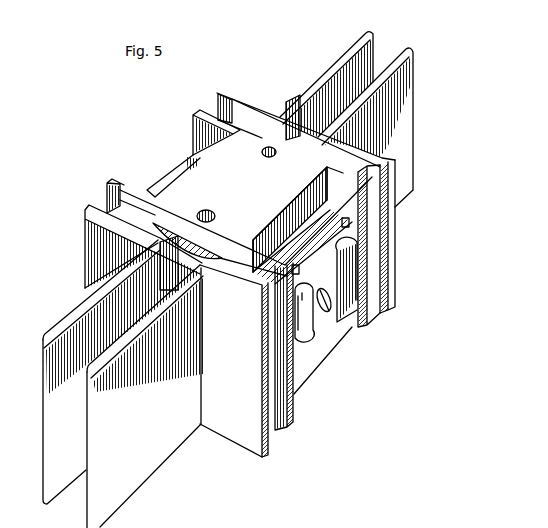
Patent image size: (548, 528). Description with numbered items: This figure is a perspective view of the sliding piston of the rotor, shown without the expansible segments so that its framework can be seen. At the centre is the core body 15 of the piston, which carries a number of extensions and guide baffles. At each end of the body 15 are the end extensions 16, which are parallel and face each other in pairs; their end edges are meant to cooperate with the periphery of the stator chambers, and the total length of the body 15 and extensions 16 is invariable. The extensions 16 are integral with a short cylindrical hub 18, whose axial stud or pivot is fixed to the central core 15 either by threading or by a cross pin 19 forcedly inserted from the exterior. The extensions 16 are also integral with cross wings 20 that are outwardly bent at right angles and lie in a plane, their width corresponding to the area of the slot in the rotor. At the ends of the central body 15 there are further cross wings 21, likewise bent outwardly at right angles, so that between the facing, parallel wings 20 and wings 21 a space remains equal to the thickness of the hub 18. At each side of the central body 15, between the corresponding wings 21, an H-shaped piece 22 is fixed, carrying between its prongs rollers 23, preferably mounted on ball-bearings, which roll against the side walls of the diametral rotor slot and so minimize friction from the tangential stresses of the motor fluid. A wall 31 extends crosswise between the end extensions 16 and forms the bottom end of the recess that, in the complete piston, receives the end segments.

The body 15 is at (193, 178).
The end extensions 16 is at (328, 67).
The cylindrical hub 18 is at (152, 230).
The cross pin 19 is at (200, 213).
The cross wings 20 is at (247, 104).
The cross wings 21 is at (200, 113).
The H-shaped piece 22 is at (187, 158).
The rollers 23 is at (350, 305).
The wall 31 is at (300, 133).